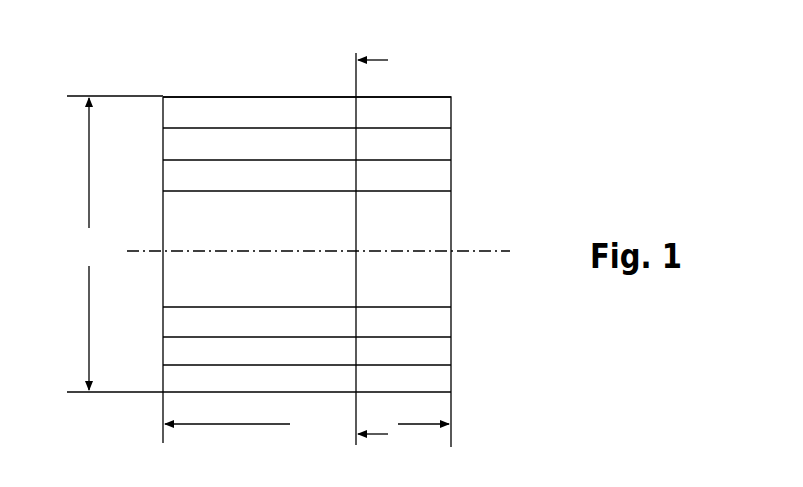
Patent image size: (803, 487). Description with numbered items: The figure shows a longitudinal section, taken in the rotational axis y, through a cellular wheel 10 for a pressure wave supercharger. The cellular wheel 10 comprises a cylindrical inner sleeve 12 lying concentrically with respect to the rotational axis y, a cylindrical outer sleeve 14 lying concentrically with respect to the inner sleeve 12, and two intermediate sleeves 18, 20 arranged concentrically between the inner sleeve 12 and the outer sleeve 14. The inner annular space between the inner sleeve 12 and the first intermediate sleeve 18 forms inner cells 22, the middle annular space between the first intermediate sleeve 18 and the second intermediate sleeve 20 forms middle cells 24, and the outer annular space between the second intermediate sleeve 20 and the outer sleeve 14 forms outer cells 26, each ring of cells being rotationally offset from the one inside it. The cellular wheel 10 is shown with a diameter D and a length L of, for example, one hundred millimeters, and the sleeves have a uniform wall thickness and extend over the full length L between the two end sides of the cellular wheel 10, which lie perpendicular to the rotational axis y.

The cellular wheel 10 is at (460, 68).
The inner sleeve 12 is at (228, 191).
The outer sleeve 14 is at (318, 97).
The first intermediate sleeve 18 is at (303, 128).
The second intermediate sleeve 20 is at (273, 160).
The inner cells 22 is at (440, 180).
The middle cells 24 is at (437, 148).
The outer cells 26 is at (437, 117).